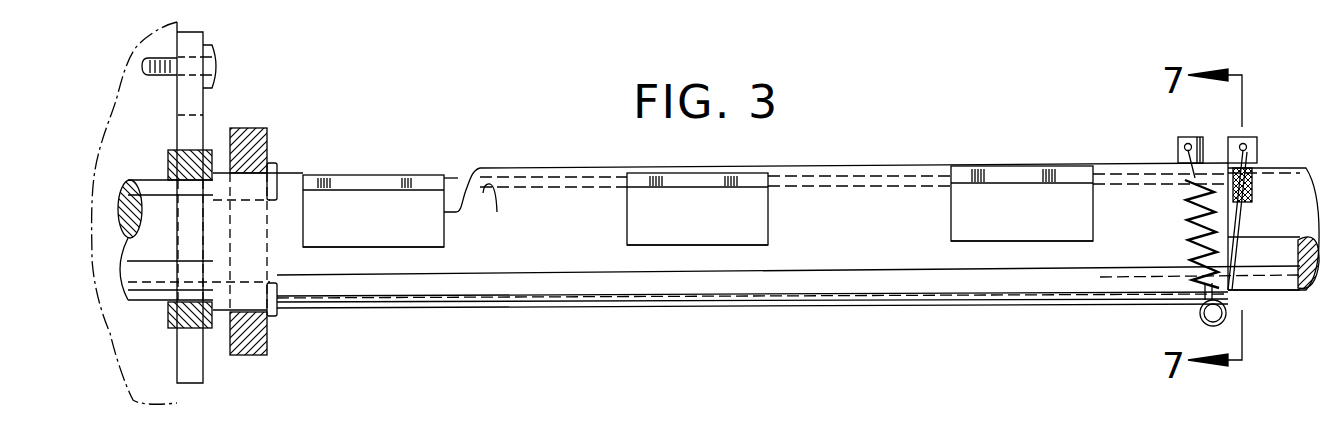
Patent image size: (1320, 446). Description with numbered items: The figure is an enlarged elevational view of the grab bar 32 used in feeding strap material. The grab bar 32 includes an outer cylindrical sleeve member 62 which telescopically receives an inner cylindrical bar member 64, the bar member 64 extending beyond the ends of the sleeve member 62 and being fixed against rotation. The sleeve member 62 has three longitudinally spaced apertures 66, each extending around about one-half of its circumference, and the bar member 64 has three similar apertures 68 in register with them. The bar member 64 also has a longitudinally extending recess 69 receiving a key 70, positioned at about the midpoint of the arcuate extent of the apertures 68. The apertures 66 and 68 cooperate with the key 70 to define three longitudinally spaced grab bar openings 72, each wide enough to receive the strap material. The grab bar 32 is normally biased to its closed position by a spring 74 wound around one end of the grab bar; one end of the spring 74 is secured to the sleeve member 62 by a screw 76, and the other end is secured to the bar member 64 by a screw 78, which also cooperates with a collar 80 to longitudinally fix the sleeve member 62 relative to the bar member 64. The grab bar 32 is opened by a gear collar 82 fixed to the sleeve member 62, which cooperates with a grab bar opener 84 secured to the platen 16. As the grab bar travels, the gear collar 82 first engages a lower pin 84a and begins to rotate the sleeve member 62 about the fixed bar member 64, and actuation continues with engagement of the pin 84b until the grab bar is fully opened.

The platen 16 is at (142, 100).
The grab bar opener 84 is at (190, 128).
The collar 80 is at (174, 306).
The gear collar 82 is at (262, 143).
The lower pin 84a is at (275, 313).
The pin 84b is at (277, 165).
The key 70 is at (393, 183).
The longitudinally extending recess 69 is at (495, 200).
The apertures 66 is at (303, 220).
The apertures 68 is at (444, 218).
The grab bar openings 72 is at (357, 227).
The grab bar 32 is at (740, 312).
The sleeve member 62 is at (910, 282).
The bar member 64 is at (1280, 280).
The spring 74 is at (1188, 213).
The screw 76 is at (1178, 138).
The screw 78 is at (1252, 153).